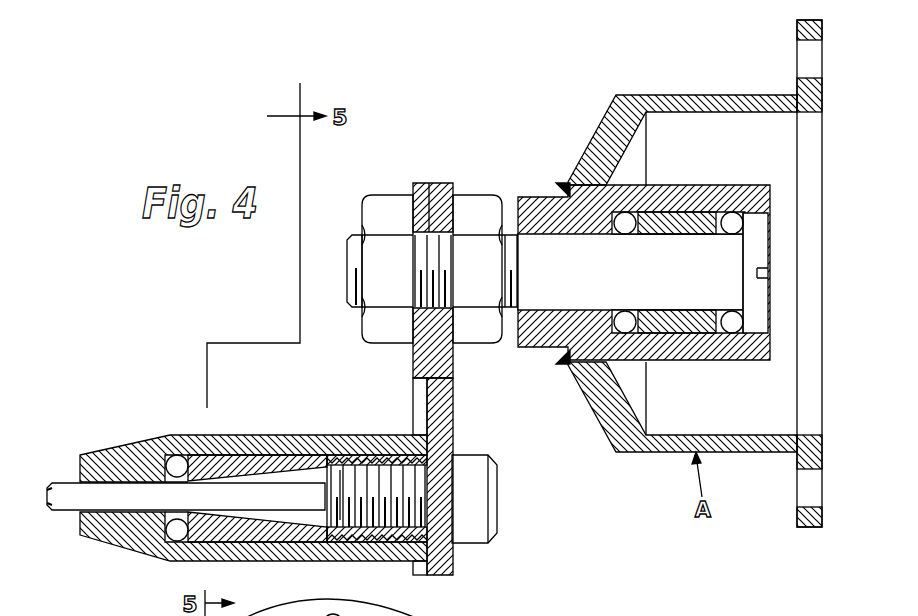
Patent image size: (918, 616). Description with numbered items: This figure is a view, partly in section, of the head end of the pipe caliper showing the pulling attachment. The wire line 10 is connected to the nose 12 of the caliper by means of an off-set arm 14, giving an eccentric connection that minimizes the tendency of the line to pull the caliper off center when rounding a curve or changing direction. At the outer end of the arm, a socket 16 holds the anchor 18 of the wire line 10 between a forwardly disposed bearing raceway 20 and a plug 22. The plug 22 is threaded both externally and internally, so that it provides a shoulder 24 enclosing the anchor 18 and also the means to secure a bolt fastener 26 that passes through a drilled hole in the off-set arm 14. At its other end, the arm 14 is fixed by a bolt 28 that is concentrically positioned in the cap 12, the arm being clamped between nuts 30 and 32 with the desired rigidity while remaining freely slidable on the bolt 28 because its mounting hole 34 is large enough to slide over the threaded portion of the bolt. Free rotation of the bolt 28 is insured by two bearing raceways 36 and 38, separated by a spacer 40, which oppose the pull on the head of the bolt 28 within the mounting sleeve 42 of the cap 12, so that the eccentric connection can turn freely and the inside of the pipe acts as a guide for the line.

The wire line 10 is at (68, 497).
The nose 12 is at (653, 103).
The off-set arm 14 is at (445, 408).
The socket 16 is at (143, 543).
The anchor 18 is at (245, 532).
The bearing raceway 20 is at (176, 453).
The plug 22 is at (357, 535).
The shoulder 24 is at (323, 468).
The bolt fastener 26 is at (477, 523).
The bolt 28 is at (758, 312).
The nut 30 is at (470, 212).
The nut 32 is at (384, 208).
The mounting hole 34 is at (429, 183).
The bearing raceway 36 is at (732, 220).
The bearing raceway 38 is at (622, 223).
The spacer 40 is at (681, 322).
The mounting sleeve 42 is at (760, 197).